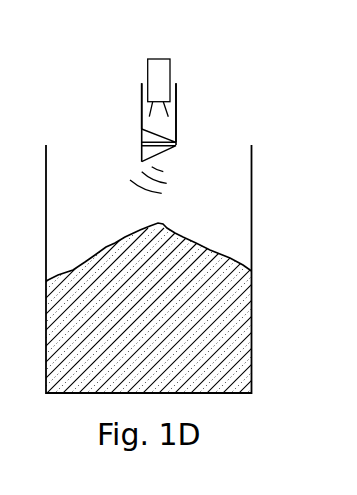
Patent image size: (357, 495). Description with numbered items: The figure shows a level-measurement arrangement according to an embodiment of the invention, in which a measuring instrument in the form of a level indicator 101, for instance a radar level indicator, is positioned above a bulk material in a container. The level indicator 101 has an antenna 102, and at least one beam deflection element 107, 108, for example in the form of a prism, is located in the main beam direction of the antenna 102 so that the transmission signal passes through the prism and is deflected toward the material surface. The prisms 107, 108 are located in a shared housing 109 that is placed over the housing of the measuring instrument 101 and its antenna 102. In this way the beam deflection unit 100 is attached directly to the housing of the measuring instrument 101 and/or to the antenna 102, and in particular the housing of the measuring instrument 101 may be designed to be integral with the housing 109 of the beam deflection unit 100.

The beam deflection unit 100 is at (134, 152).
The level indicator 101 is at (165, 70).
The antenna 102 is at (168, 112).
The beam deflection element 107 is at (140, 138).
The beam deflection element 108 is at (157, 153).
The housing 109 is at (141, 102).